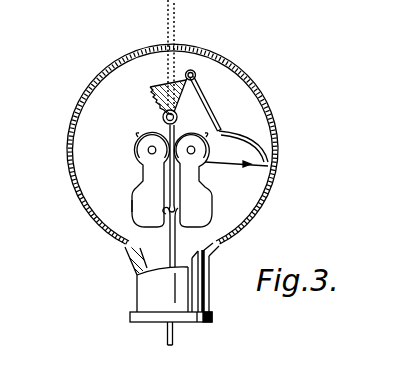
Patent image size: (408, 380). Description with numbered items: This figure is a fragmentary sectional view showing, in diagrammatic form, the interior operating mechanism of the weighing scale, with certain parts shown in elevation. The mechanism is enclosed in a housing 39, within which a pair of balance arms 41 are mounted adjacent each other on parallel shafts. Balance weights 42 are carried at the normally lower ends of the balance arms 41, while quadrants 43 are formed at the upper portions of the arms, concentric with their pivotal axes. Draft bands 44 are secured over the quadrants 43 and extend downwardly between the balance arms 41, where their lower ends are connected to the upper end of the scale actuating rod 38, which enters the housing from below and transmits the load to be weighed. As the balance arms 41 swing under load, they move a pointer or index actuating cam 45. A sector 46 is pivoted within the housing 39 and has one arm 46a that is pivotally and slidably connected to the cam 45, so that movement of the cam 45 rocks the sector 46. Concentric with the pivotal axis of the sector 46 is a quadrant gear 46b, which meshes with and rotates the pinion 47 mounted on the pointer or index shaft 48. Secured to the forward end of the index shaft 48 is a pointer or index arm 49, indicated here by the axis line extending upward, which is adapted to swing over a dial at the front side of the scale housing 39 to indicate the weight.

The scale actuating rod 38 is at (168, 332).
The housing 39 is at (78, 198).
The balance arms 41 is at (152, 182).
The balance weights 42 is at (140, 212).
The quadrants 43 is at (145, 151).
The draft bands 44 is at (194, 180).
The pointer or index actuating cam 45 is at (268, 165).
The sector 46 is at (195, 70).
The arm of sector 46a is at (178, 113).
The quadrant gear 46b is at (150, 87).
The pinion 47 is at (163, 114).
The pointer or index shaft 48 is at (202, 84).
The pointer or index arm 49 is at (177, 33).